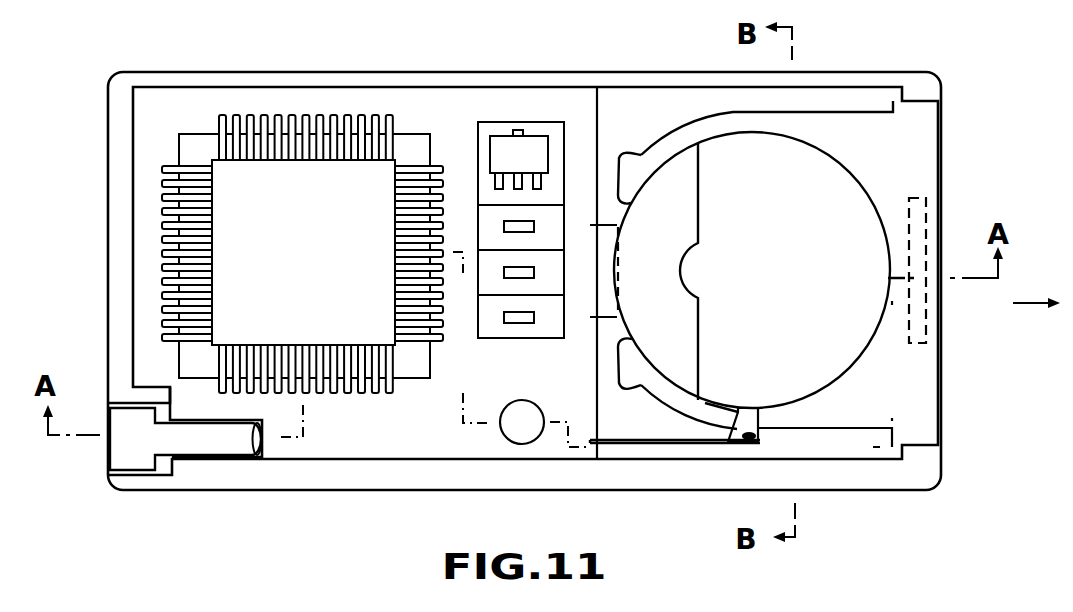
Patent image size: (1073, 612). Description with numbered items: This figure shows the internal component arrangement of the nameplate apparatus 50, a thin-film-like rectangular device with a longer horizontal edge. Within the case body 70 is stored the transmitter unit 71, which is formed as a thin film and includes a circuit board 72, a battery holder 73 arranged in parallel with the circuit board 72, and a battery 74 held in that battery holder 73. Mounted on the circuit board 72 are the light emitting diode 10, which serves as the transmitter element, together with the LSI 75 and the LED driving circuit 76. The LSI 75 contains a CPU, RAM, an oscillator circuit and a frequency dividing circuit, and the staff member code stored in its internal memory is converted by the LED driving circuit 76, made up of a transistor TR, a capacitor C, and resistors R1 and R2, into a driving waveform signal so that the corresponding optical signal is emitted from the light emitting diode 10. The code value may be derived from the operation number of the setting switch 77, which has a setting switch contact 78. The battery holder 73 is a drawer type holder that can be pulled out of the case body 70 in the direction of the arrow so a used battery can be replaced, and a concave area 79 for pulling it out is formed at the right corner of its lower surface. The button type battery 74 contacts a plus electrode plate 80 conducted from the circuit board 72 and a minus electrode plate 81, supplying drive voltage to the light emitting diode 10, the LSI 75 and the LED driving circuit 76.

The nameplate apparatus 50 is at (455, 45).
The case body 70 is at (620, 97).
The transmitter unit 71 is at (575, 418).
The circuit board 72 is at (337, 98).
The battery holder 73 is at (825, 123).
The battery 74 is at (850, 207).
The LSI 75 is at (315, 328).
The LED driving circuit 76 is at (545, 128).
The setting switch 77 is at (120, 452).
The setting switch contact 78 is at (258, 452).
The concave area 79 is at (925, 320).
The plus electrode plate 80 is at (607, 267).
The minus electrode plate 81 is at (758, 420).
The light emitting diode 10 is at (520, 444).